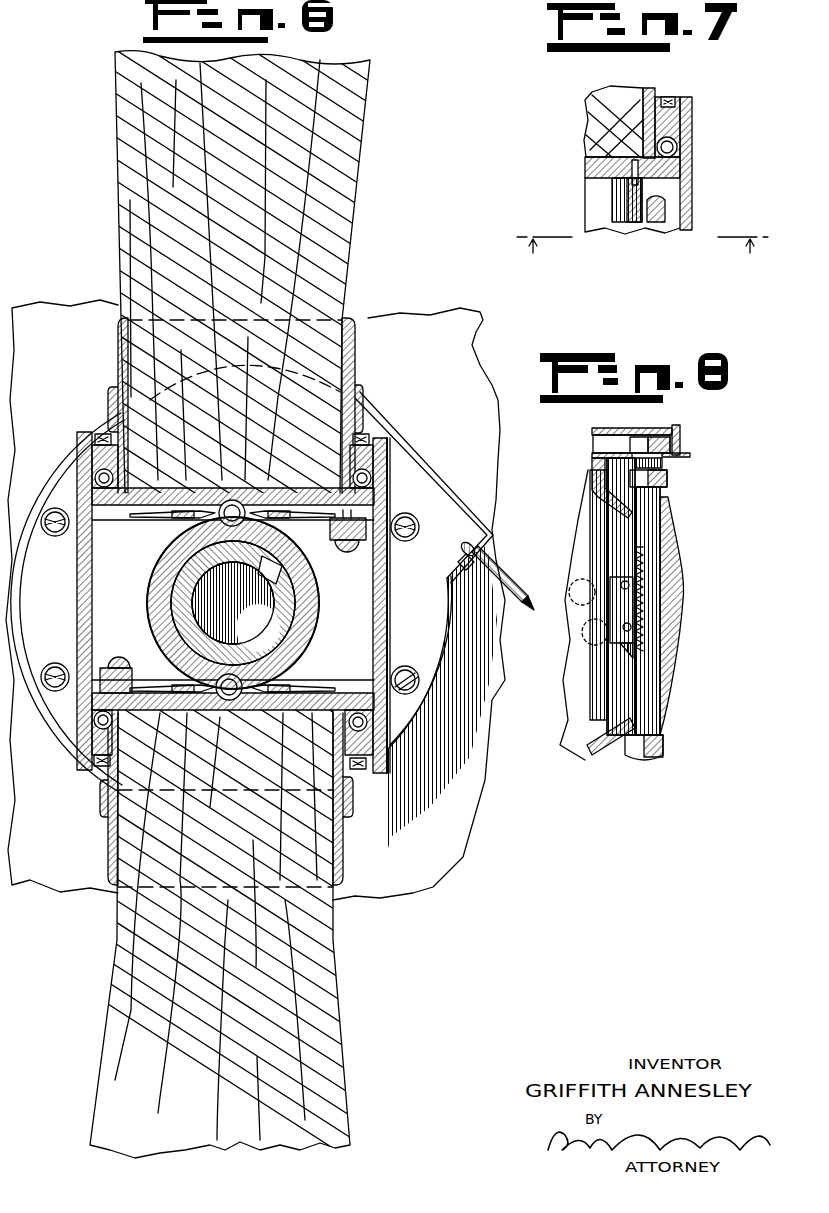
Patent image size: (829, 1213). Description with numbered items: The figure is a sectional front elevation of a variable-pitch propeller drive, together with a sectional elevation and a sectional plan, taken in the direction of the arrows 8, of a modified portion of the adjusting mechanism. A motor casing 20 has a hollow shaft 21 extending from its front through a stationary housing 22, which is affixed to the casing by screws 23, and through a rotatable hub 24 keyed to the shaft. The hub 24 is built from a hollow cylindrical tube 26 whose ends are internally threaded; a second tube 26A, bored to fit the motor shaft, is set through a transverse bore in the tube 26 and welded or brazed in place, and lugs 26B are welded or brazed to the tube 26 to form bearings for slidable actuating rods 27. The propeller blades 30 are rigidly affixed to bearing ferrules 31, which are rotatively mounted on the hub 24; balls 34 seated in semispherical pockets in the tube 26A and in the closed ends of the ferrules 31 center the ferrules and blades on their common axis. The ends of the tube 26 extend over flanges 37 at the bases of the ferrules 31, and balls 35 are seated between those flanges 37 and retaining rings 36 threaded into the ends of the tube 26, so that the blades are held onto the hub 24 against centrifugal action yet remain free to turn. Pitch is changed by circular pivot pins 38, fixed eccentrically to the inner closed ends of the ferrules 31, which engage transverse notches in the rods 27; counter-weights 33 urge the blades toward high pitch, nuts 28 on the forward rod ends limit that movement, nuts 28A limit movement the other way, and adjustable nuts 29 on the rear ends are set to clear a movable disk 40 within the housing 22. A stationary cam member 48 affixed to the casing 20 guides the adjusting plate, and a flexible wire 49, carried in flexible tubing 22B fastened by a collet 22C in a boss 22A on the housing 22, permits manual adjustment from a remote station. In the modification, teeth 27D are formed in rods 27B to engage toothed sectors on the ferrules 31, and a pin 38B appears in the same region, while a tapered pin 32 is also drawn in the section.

In FIG. 6, the motor casing 20 is at (438, 313).
In FIG. 6, the hollow shaft 21 is at (274, 605).
In FIG. 6, the stationary housing 22 is at (66, 494).
In FIG. 8, the stationary housing 22 is at (690, 456).
In FIG. 6, the boss 22A is at (438, 500).
In FIG. 6, the flexible tubing 22B is at (490, 568).
In FIG. 6, the collet 22C is at (474, 548).
In FIG. 6, the screws 23 is at (52, 510).
In FIG. 6, the rotatable hub 24 is at (70, 605).
In FIG. 6, the hollow cylindrical tube 26 is at (386, 597).
In FIG. 7, the hollow cylindrical tube 26 is at (664, 163).
In FIG. 8, the hollow cylindrical tube 26 is at (680, 600).
In FIG. 6, the tube 26A is at (312, 627).
In FIG. 8, the tube 26A is at (590, 718).
In FIG. 8, the lugs 26B is at (672, 523).
In FIG. 6, the actuating rods 27 is at (386, 578).
In FIG. 8, the actuating rods 27 is at (665, 582).
In FIG. 7, the rods 27B is at (658, 224).
In FIG. 8, the teeth 27D is at (650, 561).
In FIG. 8, the nuts 28 is at (664, 745).
In FIG. 8, the nuts 28A is at (668, 480).
In FIG. 8, the adjustable nuts 29 is at (670, 445).
In FIG. 6, the propeller blades 30 is at (350, 147).
In FIG. 7, the propeller blades 30 is at (590, 106).
In FIG. 6, the bearing ferrules 31 is at (356, 341).
In FIG. 7, the bearing ferrules 31 is at (655, 90).
In FIG. 6, the tapered pin 32 is at (155, 518).
In FIG. 6, the counter-weights 33 is at (362, 398).
In FIG. 6, the balls 34 is at (220, 519).
In FIG. 6, the balls 35 is at (95, 480).
In FIG. 7, the balls 35 is at (680, 148).
In FIG. 6, the retaining rings 36 is at (100, 432).
In FIG. 7, the retaining rings 36 is at (688, 97).
In FIG. 6, the flanges 37 is at (380, 503).
In FIG. 7, the flanges 37 is at (680, 170).
In FIG. 6, the circular pivot pins 38 is at (388, 558).
In FIG. 7, the pin 38B is at (628, 225).
In FIG. 8, the pin 38B is at (640, 615).
In FIG. 8, the movable disk 40 is at (605, 428).
In FIG. 8, the stationary cam member 48 is at (680, 428).
In FIG. 6, the flexible wire 49 is at (530, 608).
In FIG. 7, the arrows 8 is at (642, 258).